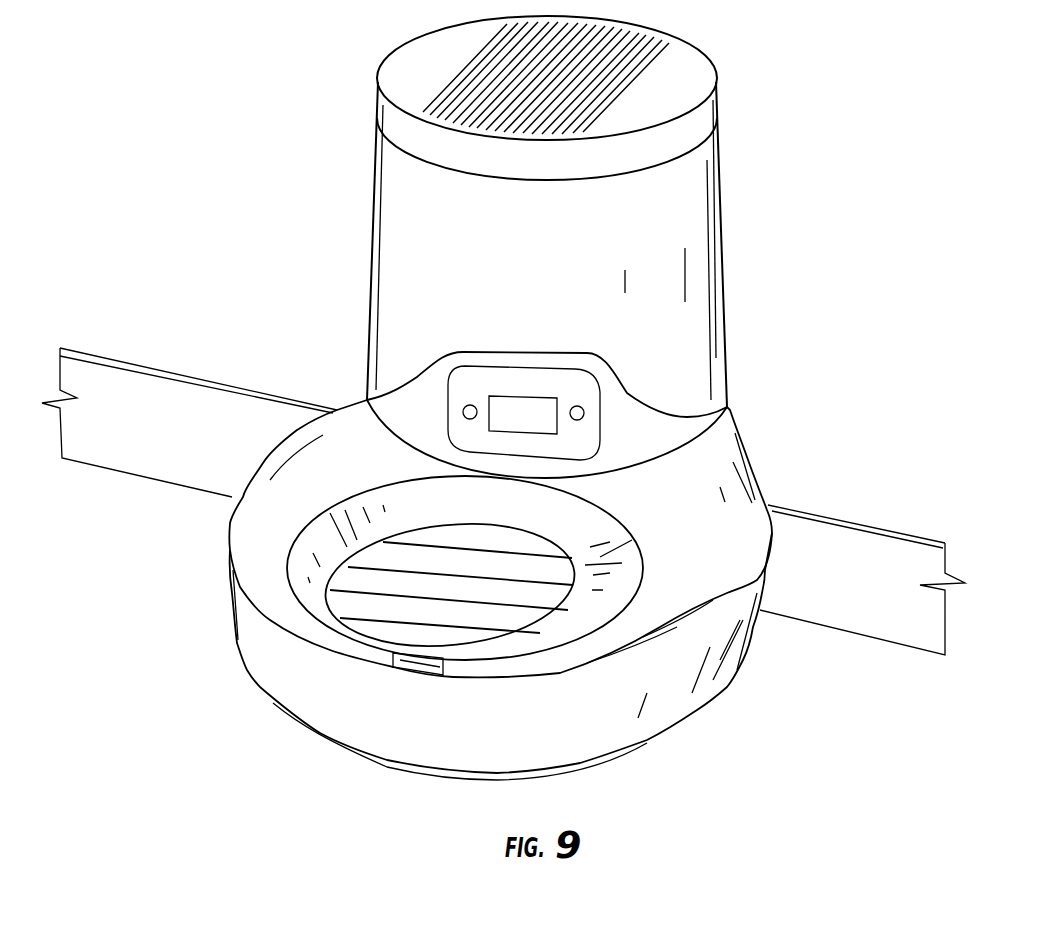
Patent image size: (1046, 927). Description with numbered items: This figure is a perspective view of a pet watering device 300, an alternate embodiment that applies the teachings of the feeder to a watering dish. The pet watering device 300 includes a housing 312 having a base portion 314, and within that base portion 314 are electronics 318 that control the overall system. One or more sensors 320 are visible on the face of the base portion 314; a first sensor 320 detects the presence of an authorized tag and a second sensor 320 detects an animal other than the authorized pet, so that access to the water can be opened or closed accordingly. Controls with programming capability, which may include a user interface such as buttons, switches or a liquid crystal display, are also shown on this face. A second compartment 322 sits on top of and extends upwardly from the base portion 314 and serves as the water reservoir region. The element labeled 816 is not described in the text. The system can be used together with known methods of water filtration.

The pet watering device 300 is at (503, 432).
The housing 312 is at (687, 707).
The base portion 314 is at (250, 633).
The electronics 318 is at (537, 418).
The sensors 320 is at (473, 408).
The second compartment 322 is at (678, 68).
The vent grille 816 is at (370, 625).